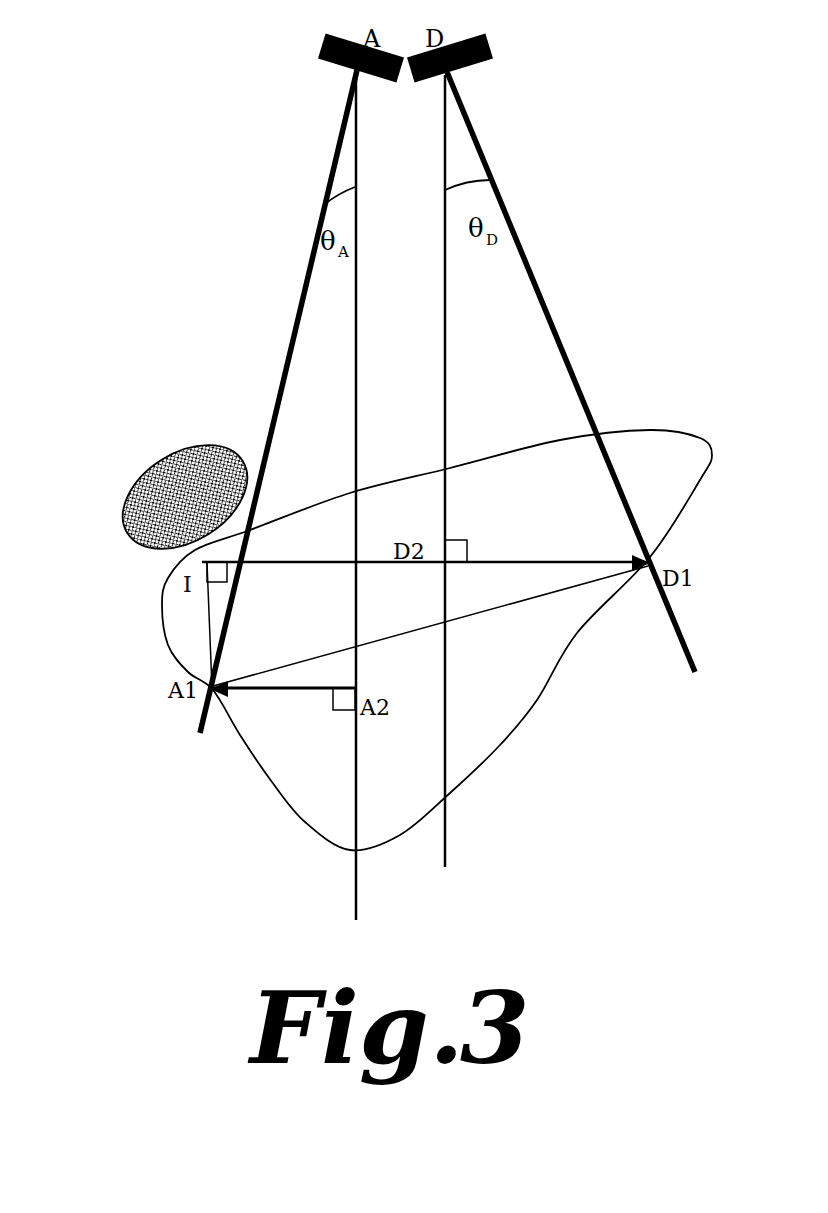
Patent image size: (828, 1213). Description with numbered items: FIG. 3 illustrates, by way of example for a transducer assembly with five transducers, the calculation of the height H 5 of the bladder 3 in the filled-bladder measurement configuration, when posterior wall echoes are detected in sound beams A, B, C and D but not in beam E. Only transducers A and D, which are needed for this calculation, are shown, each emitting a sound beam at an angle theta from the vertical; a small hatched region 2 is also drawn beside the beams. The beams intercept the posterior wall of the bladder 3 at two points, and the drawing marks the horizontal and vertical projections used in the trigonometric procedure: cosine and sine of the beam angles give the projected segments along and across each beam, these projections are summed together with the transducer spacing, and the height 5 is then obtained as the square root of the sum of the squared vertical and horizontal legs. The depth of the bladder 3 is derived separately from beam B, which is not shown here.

The object to be located 2 is at (157, 488).
The bladder 3 is at (280, 782).
The height H 5 is at (530, 605).